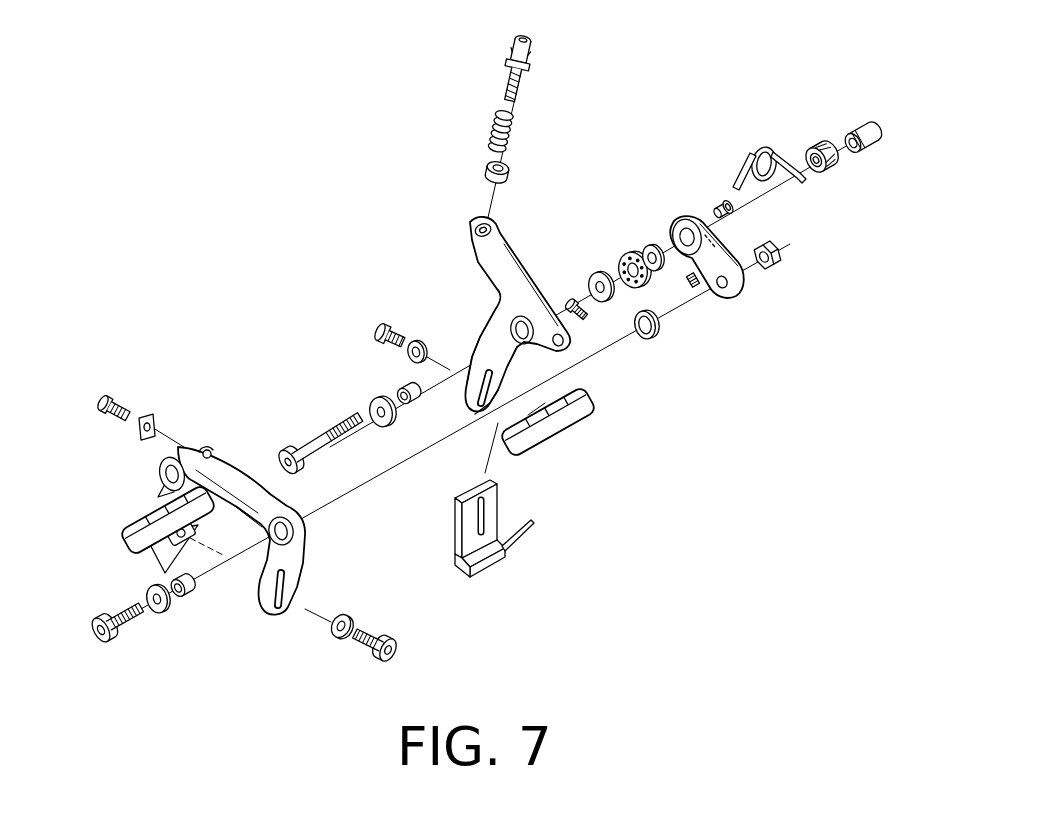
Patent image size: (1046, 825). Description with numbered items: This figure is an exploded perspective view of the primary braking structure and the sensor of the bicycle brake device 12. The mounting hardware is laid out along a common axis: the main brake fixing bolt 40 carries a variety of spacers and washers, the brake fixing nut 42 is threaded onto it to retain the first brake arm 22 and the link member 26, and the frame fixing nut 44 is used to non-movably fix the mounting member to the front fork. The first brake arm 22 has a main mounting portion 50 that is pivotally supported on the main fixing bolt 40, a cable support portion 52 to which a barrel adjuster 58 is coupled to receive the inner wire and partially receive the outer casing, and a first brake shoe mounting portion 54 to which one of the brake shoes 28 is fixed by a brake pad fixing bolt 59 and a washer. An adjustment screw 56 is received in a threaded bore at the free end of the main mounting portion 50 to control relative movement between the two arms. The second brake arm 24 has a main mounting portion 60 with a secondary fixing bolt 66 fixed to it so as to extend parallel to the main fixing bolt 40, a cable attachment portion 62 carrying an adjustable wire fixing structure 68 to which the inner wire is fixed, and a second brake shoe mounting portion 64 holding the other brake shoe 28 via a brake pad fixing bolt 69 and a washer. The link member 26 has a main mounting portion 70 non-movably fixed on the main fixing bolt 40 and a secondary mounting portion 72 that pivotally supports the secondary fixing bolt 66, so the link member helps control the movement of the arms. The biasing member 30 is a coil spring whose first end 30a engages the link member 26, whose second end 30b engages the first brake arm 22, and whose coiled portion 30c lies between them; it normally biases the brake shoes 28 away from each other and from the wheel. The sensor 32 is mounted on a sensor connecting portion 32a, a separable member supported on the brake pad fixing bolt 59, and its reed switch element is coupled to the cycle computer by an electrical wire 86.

The bicycle brake device 12 is at (628, 119).
The first brake arm 22 is at (488, 292).
The second brake arm 24 is at (325, 540).
The link member 26 is at (752, 296).
The brake shoes 28 is at (132, 526).
The biasing member 30 is at (740, 153).
The first end 30a is at (803, 178).
The second end 30b is at (733, 182).
The coiled portion 30c is at (778, 152).
The sensor 32 is at (487, 560).
The sensor connecting portion 32a is at (452, 532).
The main brake fixing bolt 40 is at (305, 445).
The brake fixing nut 42 is at (818, 146).
The frame fixing nut 44 is at (862, 122).
The main mounting portion 50 is at (524, 300).
The cable support portion 52 is at (500, 237).
The first brake shoe mounting portion 54 is at (466, 396).
The adjustment screw 56 is at (583, 316).
The barrel adjuster 58 is at (510, 30).
The brake pad fixing bolt 59 is at (382, 322).
The main mounting portion 60 is at (243, 480).
The cable attachment portion 62 is at (163, 460).
The second brake shoe mounting portion 64 is at (305, 570).
The secondary fixing bolt 66 is at (122, 632).
The adjustable wire fixing structure 68 is at (98, 390).
The brake pad fixing bolt 69 is at (358, 641).
The main mounting portion 70 is at (693, 220).
The secondary mounting portion 72 is at (708, 285).
The electrical wire 86 is at (530, 530).